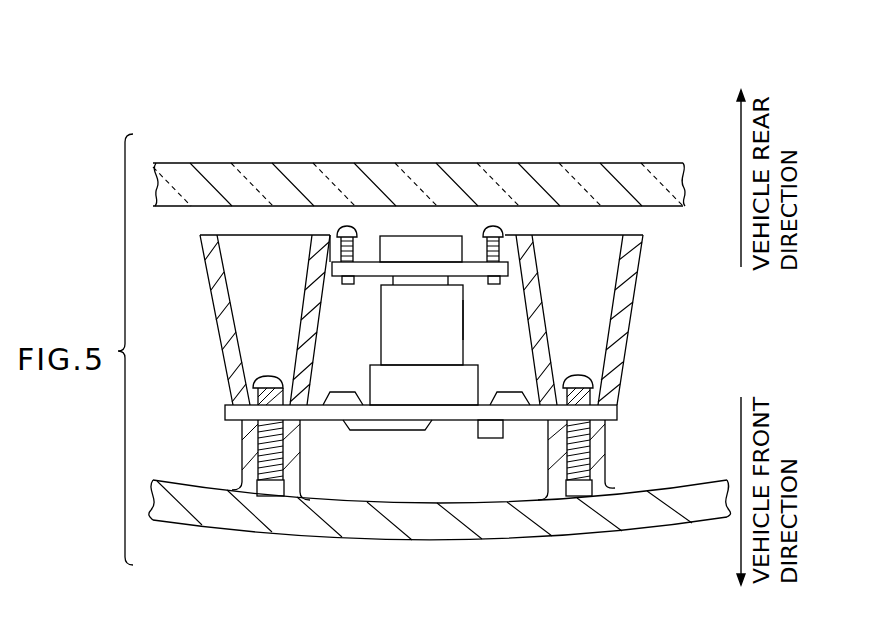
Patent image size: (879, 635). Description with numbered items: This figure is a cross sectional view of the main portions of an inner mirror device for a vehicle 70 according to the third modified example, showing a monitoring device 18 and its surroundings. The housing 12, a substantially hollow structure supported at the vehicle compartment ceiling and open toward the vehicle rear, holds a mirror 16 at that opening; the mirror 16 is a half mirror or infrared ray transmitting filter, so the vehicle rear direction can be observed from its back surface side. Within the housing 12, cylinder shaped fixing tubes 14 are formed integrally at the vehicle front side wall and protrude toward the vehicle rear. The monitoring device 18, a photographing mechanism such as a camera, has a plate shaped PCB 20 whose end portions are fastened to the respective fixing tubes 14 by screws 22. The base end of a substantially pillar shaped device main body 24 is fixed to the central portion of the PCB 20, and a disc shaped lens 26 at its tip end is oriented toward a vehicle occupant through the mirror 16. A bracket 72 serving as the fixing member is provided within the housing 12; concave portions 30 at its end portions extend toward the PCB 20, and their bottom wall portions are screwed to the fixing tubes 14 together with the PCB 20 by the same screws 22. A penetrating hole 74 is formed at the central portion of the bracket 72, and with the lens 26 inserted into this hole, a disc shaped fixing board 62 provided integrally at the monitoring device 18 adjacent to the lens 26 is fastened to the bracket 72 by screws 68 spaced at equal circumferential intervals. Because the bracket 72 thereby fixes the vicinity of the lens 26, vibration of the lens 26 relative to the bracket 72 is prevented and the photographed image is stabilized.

The housing 12 is at (216, 529).
The fixing tube 14 is at (242, 455).
The mirror 16 is at (222, 163).
The monitoring device 18 is at (382, 343).
The PCB 20 is at (444, 421).
The screw 22 is at (268, 376).
The device main body 24 is at (465, 320).
The lens 26 is at (420, 236).
The concave portion 30 is at (214, 305).
The fixing board 62 is at (473, 277).
The screw 68 is at (347, 225).
The inner mirror device for a vehicle 70 is at (369, 86).
The bracket 72 is at (323, 234).
The penetrating hole 74 is at (474, 262).